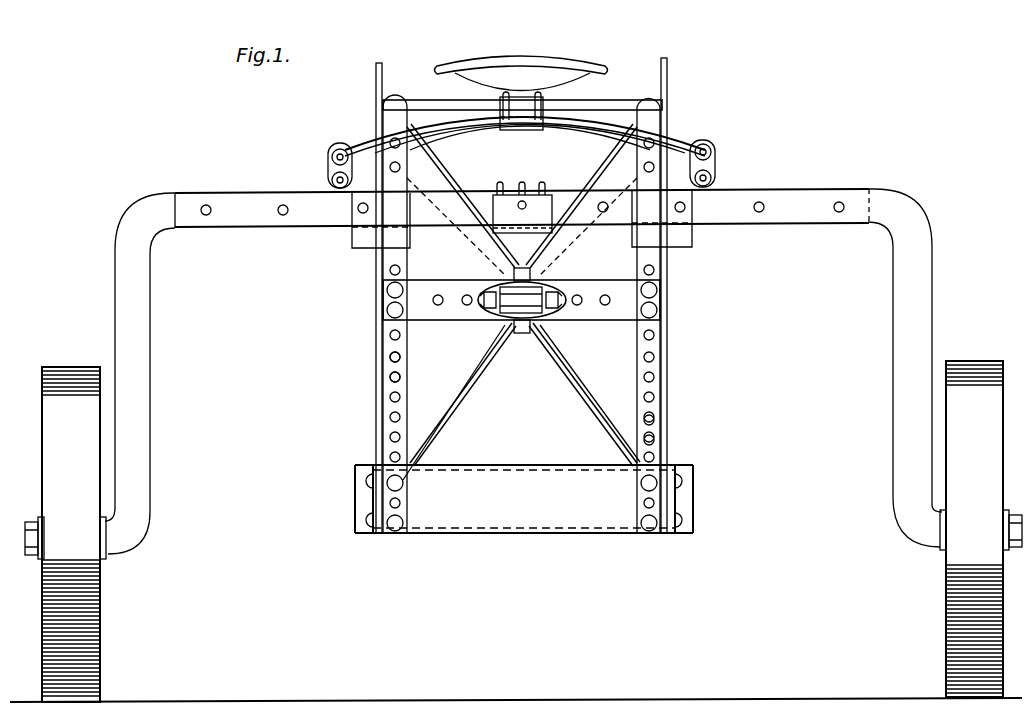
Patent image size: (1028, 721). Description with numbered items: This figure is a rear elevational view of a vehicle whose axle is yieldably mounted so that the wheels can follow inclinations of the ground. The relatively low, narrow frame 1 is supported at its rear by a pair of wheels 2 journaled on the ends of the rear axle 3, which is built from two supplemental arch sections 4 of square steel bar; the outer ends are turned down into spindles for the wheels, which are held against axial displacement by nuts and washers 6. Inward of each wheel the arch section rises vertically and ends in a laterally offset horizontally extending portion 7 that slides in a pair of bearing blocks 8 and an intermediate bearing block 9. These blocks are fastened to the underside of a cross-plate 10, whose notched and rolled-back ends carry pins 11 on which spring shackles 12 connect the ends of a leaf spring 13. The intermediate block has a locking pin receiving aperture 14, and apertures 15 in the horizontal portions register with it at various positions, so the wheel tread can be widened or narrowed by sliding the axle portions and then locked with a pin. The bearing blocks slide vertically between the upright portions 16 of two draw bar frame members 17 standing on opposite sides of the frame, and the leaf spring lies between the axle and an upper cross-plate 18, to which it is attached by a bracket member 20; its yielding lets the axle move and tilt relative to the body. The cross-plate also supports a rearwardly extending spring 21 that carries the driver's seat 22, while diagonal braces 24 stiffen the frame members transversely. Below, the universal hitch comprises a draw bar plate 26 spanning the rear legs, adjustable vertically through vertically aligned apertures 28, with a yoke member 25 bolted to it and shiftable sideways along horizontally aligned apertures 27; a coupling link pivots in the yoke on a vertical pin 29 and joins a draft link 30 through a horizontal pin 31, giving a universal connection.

The frame 1 is at (522, 295).
The wheels 2 is at (46, 410).
The rear axle 3 is at (510, 352).
The arch sections 4 is at (116, 288).
The nuts and washers 6 is at (38, 522).
The horizontally extending portions 7 is at (522, 213).
The bearing blocks 8 is at (354, 240).
The intermediate bearing block 9 is at (496, 200).
The cross-plate 10 is at (556, 192).
The pins 11 is at (330, 178).
The spring shackles 12 is at (519, 157).
The leaf spring 13 is at (655, 126).
The locking pin receiving aperture 14 is at (521, 195).
The apertures 15 is at (765, 212).
The upright portions 16 is at (384, 415).
The draw bar frame members 17 is at (376, 378).
The cross-plate 18 is at (606, 101).
The bracket member 20 is at (521, 68).
The spring 21 is at (518, 95).
The driver's seat 22 is at (566, 62).
The braces 24 is at (473, 381).
The yoke member 25 is at (522, 334).
The draw bar plate 26 is at (555, 283).
The horizontally aligned apertures 27 is at (605, 294).
The vertically aligned apertures 28 is at (390, 375).
The vertical pin 29 is at (516, 311).
The draft link 30 is at (548, 314).
The horizontal pin 31 is at (490, 306).